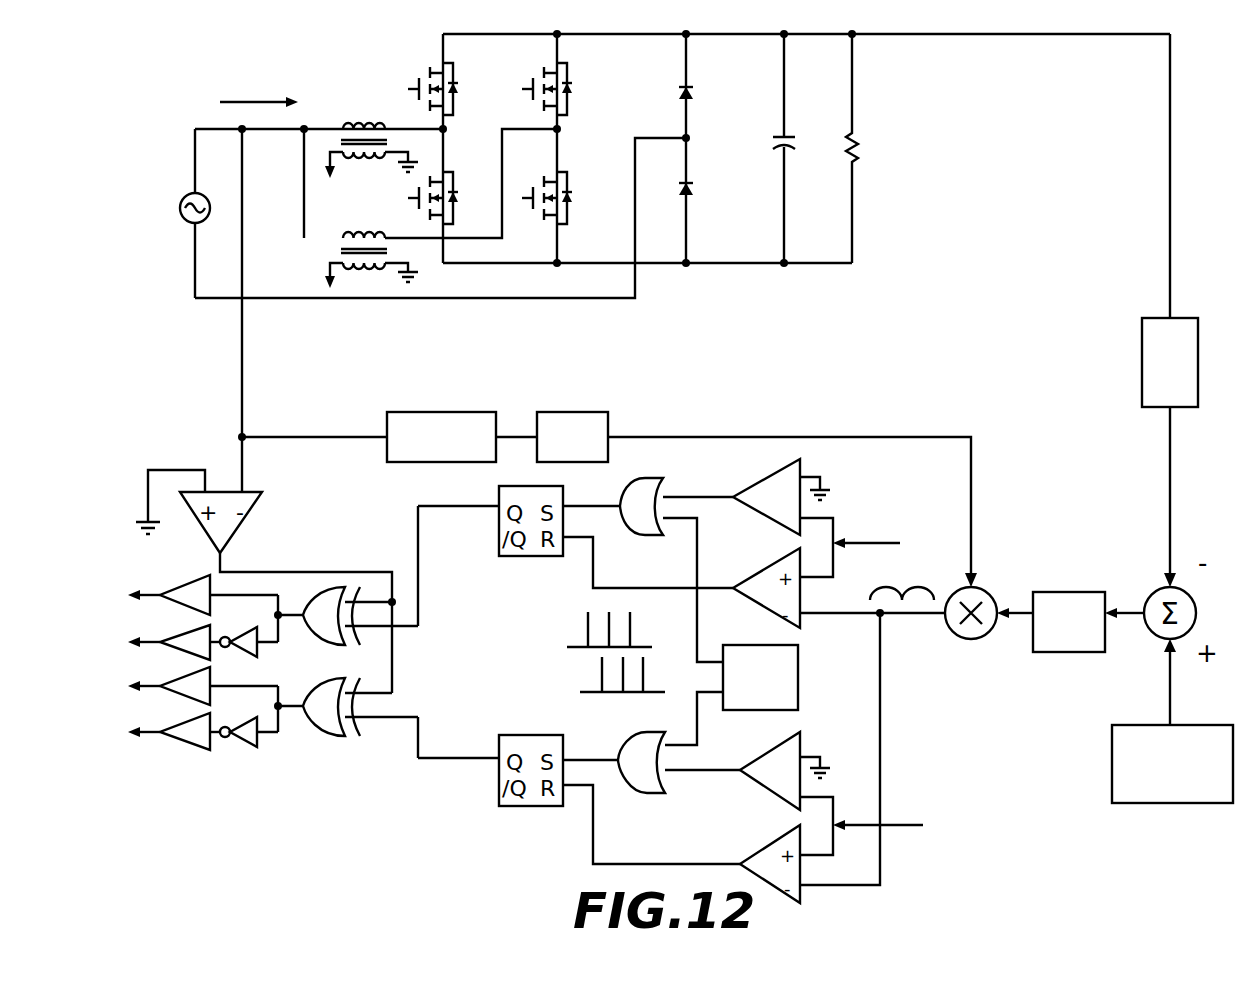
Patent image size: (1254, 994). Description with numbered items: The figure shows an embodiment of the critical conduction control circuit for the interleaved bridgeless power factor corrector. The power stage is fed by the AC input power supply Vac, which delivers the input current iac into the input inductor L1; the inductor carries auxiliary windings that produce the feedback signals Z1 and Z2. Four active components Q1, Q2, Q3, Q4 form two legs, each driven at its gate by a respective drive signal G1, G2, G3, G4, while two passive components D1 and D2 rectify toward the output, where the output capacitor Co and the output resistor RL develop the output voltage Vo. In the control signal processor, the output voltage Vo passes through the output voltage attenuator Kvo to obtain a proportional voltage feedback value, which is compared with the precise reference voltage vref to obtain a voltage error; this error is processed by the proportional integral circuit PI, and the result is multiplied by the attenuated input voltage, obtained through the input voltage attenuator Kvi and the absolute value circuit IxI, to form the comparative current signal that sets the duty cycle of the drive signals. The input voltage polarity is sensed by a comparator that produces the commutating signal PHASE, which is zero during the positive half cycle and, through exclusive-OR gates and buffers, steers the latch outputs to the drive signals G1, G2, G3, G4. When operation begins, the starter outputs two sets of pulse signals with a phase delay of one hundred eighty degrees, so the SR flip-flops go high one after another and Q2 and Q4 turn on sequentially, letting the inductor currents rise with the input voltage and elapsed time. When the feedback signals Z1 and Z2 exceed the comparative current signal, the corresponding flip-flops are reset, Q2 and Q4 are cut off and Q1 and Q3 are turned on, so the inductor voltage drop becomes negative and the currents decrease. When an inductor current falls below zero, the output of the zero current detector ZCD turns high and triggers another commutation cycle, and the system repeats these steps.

The AC input power supply Vac is at (171, 213).
The input current iac is at (259, 82).
The input inductor L1 is at (379, 129).
The feedback signal Z1 is at (629, 364).
The feedback signal Z2 is at (626, 543).
The active component Q1 is at (455, 89).
The active component Q2 is at (455, 199).
The active component Q3 is at (569, 89).
The active component Q4 is at (569, 199).
The drive signal G1 is at (250, 401).
The drive signal G2 is at (250, 451).
The drive signal G3 is at (307, 356).
The drive signal G4 is at (313, 406).
The passive component D1 is at (705, 148).
The passive component D2 is at (705, 193).
The output capacitor Co is at (766, 148).
The output resistor RL is at (834, 148).
The output voltage Vo is at (881, 156).
The output voltage attenuator Kvo is at (1170, 310).
The input voltage attenuator Kvi is at (389, 437).
The absolute value circuit IxI is at (757, 493).
The proportional integral circuit PI is at (1070, 622).
The reference voltage vref is at (1172, 721).
The zero current detector ZCD is at (781, 634).
The element starter is at (760, 677).
The commutating signal PHASE is at (308, 616).